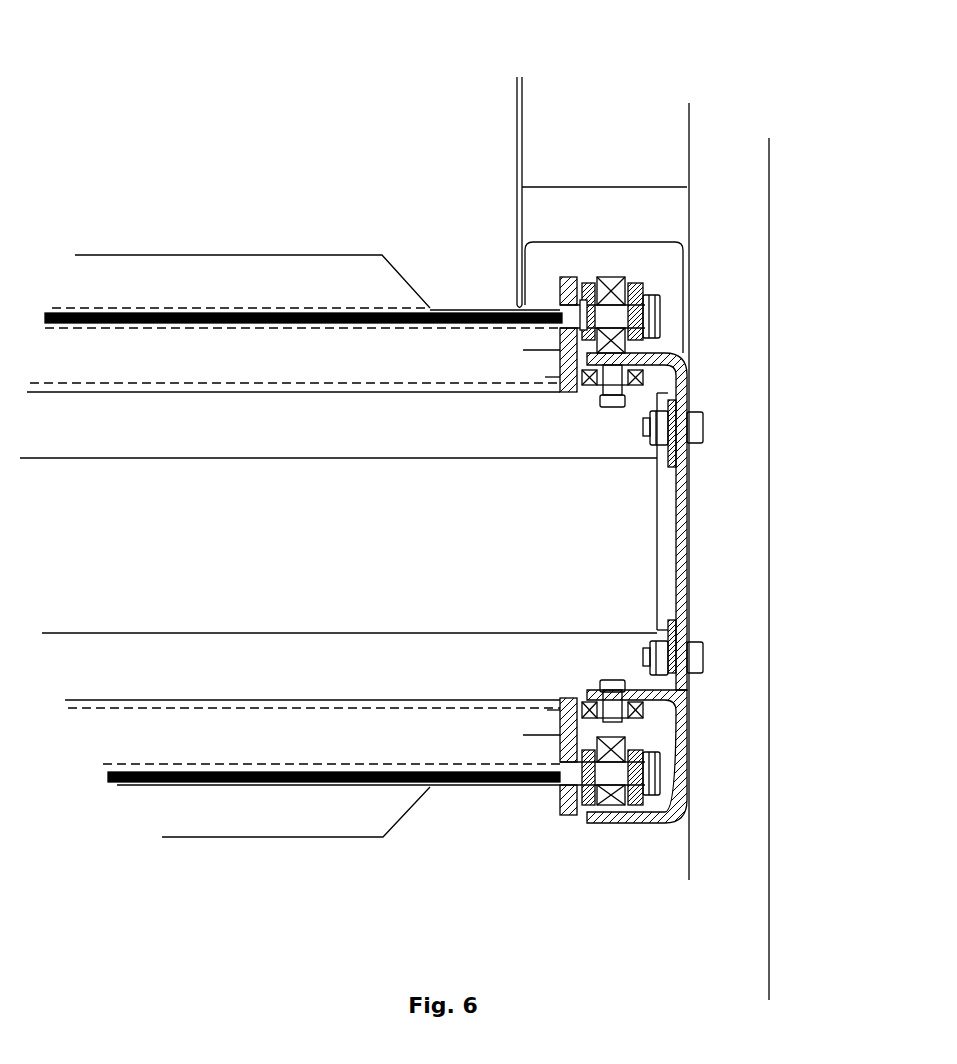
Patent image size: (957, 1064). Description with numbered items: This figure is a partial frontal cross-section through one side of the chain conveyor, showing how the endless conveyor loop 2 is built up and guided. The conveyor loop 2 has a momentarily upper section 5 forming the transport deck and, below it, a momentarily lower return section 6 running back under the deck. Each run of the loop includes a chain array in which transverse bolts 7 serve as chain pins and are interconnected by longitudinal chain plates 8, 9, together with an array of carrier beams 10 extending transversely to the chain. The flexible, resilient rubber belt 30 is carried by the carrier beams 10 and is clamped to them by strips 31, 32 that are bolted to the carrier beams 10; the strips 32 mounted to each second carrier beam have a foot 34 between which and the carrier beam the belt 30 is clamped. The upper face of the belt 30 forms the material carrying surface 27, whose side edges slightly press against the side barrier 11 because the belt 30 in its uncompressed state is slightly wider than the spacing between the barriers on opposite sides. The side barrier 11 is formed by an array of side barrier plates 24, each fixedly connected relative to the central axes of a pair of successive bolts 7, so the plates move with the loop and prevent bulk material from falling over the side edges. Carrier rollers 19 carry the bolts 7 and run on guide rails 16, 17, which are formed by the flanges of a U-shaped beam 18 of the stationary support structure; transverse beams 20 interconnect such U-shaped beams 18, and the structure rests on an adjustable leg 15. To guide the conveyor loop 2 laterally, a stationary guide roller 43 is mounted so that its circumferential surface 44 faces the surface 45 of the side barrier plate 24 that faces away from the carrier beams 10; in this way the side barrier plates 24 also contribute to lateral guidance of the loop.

The conveyor loop 2 is at (293, 545).
The upper section 5 is at (454, 296).
The lower return section 6 is at (311, 820).
The bolt 7 is at (613, 283).
The chain plate 8 is at (595, 283).
The chain plate 9 is at (584, 283).
The carrier beam 10 is at (346, 366).
The side barrier 11 is at (563, 478).
The adjustable leg 15 is at (770, 575).
The guide rail 16 is at (682, 368).
The guide rail 17 is at (678, 817).
The U-shaped beam 18 is at (698, 542).
The carrier roller 19 is at (605, 280).
The transverse beam 20 is at (346, 557).
The side barrier plate 24 is at (568, 395).
The material carrying surface 27 is at (290, 310).
The rubber belt 30 is at (480, 312).
The strip 31 is at (250, 795).
The strip 32 is at (360, 246).
The foot 34 is at (235, 308).
The guide roller 43 is at (588, 402).
The circumferential surface 44 is at (545, 377).
The surface 45 is at (523, 350).